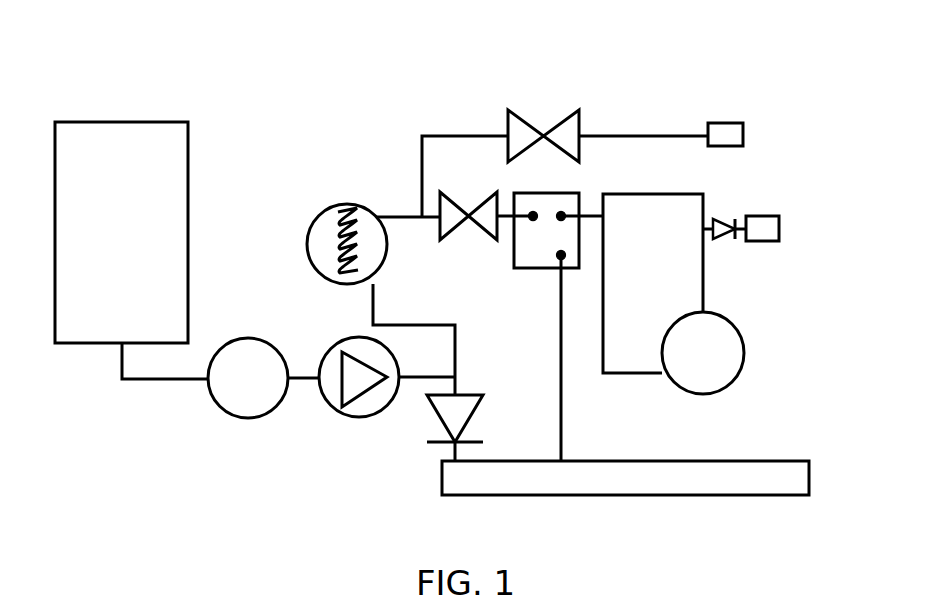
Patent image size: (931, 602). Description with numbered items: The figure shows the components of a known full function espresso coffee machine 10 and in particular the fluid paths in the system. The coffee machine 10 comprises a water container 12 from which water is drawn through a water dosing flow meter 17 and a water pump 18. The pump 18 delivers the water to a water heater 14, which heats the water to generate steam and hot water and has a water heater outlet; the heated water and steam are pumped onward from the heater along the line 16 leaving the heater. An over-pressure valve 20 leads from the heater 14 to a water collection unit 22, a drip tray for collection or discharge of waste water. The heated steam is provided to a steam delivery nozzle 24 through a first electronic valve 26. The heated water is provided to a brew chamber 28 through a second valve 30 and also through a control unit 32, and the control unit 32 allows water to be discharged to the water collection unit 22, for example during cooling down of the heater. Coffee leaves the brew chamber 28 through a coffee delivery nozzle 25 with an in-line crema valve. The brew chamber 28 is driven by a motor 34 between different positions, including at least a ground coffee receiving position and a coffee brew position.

The coffee machine 10 is at (282, 75).
The water container 12 is at (188, 195).
The water heater 14 is at (345, 204).
The line 16 is at (400, 215).
The water dosing flow meter 17 is at (266, 418).
The water pump 18 is at (371, 416).
The over-pressure valve 20 is at (480, 406).
The water collection unit 22 is at (778, 460).
The steam delivery nozzle 24 is at (735, 123).
The coffee delivery nozzle 25 is at (768, 216).
The first electronic valve 26 is at (580, 112).
The brew chamber 28 is at (703, 275).
The second valve 30 is at (465, 226).
The control unit 32 is at (534, 268).
The motor 34 is at (733, 382).